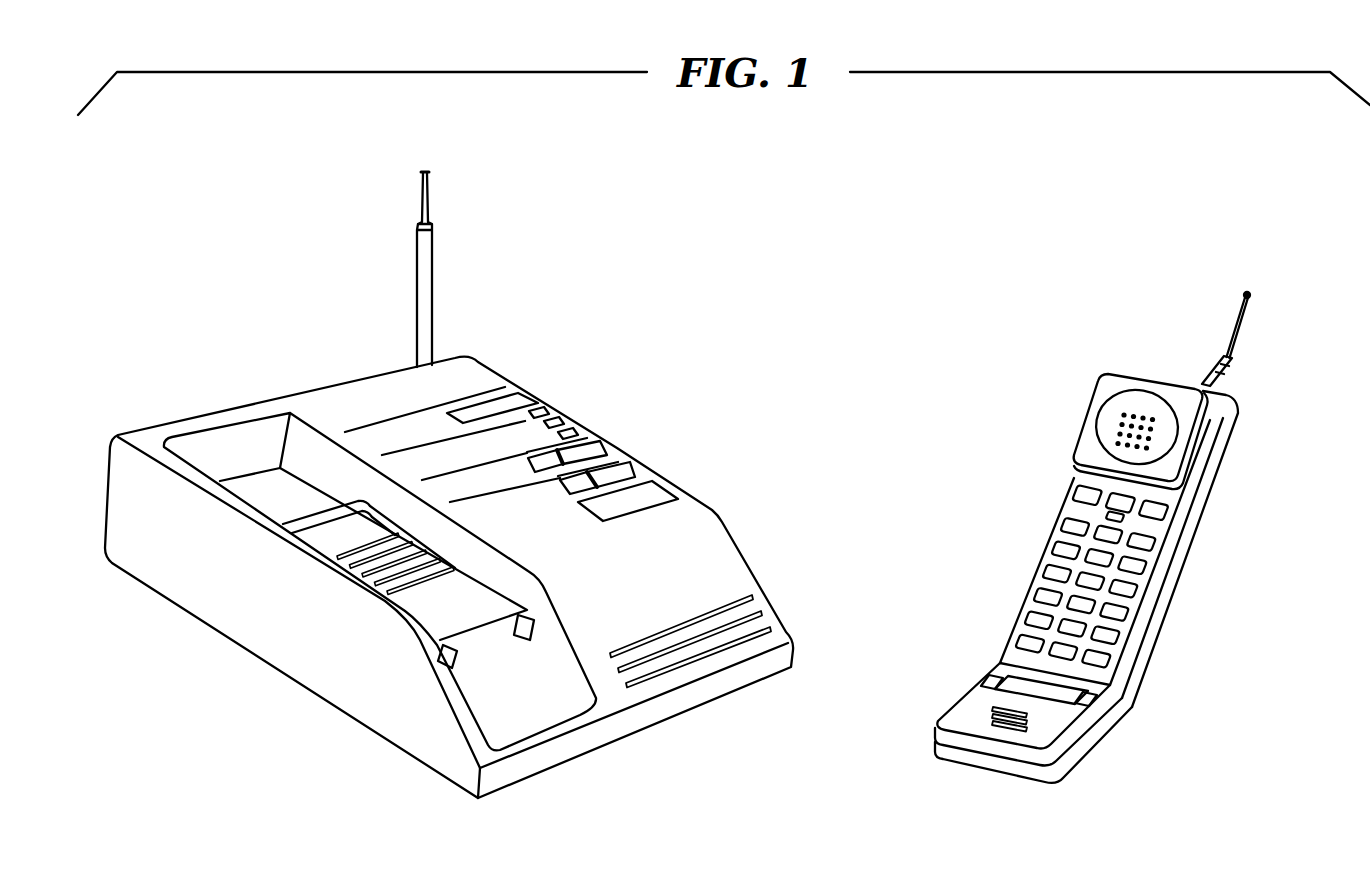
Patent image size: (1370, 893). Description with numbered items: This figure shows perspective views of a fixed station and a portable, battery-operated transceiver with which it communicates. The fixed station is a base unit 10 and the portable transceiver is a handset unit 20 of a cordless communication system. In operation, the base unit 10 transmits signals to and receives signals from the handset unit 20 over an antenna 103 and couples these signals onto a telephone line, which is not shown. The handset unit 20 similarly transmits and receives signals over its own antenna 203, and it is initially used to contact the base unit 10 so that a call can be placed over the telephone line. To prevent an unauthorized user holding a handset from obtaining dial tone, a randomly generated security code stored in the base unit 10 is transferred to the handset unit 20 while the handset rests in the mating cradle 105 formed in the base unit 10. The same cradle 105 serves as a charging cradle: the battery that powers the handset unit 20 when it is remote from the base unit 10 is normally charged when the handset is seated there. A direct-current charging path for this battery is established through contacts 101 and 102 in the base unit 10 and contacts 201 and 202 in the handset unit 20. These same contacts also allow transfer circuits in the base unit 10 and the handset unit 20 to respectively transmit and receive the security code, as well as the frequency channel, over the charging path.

The base unit 10 is at (449, 485).
The contact 101 is at (448, 655).
The contact 102 is at (527, 622).
The antenna 103 is at (430, 268).
The cradle 105 is at (220, 437).
The handset unit 20 is at (1120, 537).
The contact 201 is at (1097, 694).
The contact 202 is at (997, 675).
The antenna 203 is at (1230, 352).